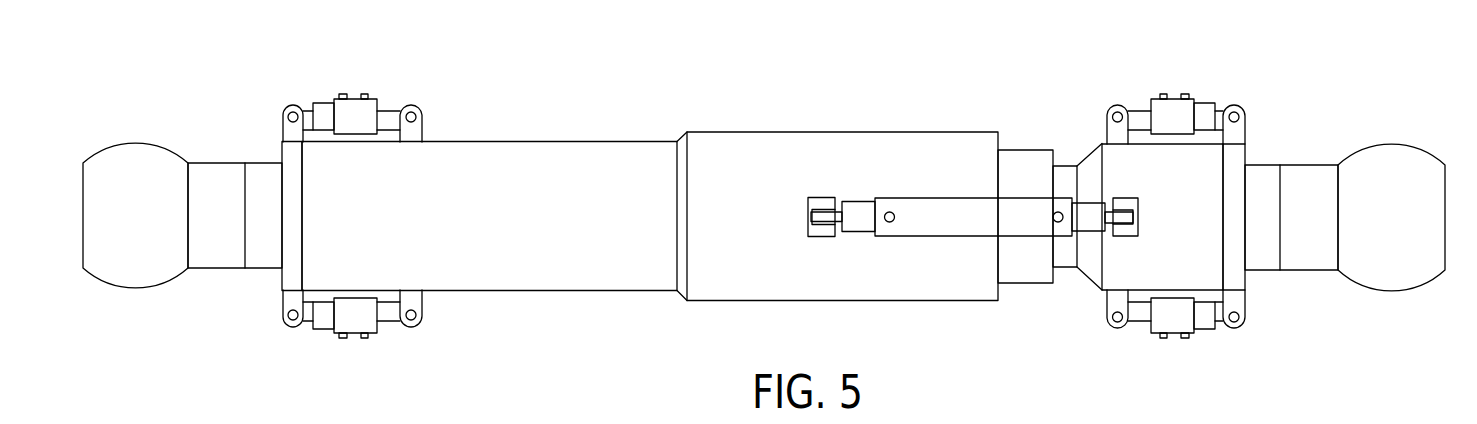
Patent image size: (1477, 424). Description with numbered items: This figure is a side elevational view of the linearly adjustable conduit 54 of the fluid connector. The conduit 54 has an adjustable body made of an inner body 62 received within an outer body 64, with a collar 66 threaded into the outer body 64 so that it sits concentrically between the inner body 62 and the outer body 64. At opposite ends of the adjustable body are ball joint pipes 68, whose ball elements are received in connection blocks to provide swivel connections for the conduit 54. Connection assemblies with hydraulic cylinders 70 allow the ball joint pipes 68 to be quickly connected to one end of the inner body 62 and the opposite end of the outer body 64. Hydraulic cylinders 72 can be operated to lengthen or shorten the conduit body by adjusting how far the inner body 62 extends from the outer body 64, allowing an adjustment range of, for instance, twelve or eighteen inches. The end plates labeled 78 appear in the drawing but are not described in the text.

The conduit 54 is at (296, 69).
The inner body 62 is at (1065, 166).
The outer body 64 is at (565, 141).
The collar 66 is at (1023, 150).
The ball joint pipes 68 is at (140, 142).
The hydraulic cylinders 70 is at (353, 93).
The hydraulic cylinders 72 is at (917, 197).
The end plate 78 is at (282, 153).